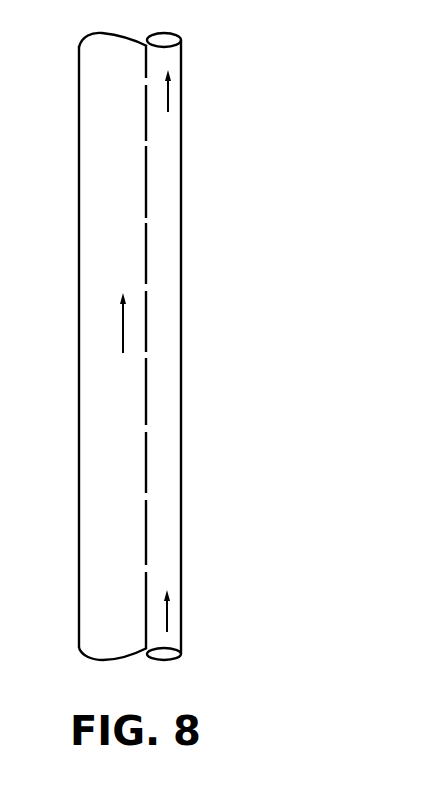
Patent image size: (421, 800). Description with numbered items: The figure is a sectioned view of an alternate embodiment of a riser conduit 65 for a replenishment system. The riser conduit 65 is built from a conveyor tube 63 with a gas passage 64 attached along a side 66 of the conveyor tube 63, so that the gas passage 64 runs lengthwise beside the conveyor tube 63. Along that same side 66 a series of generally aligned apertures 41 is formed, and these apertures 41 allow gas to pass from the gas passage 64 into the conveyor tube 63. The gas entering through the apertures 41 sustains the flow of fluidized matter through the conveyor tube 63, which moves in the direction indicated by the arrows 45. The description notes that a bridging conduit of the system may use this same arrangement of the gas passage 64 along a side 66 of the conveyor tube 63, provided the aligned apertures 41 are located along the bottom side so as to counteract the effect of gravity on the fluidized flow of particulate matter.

The apertures 41 is at (169, 152).
The arrows 45 is at (168, 89).
The conveyor tube 63 is at (120, 473).
The gas passage 64 is at (162, 423).
The riser conduit 65 is at (182, 533).
The side 66 is at (145, 470).